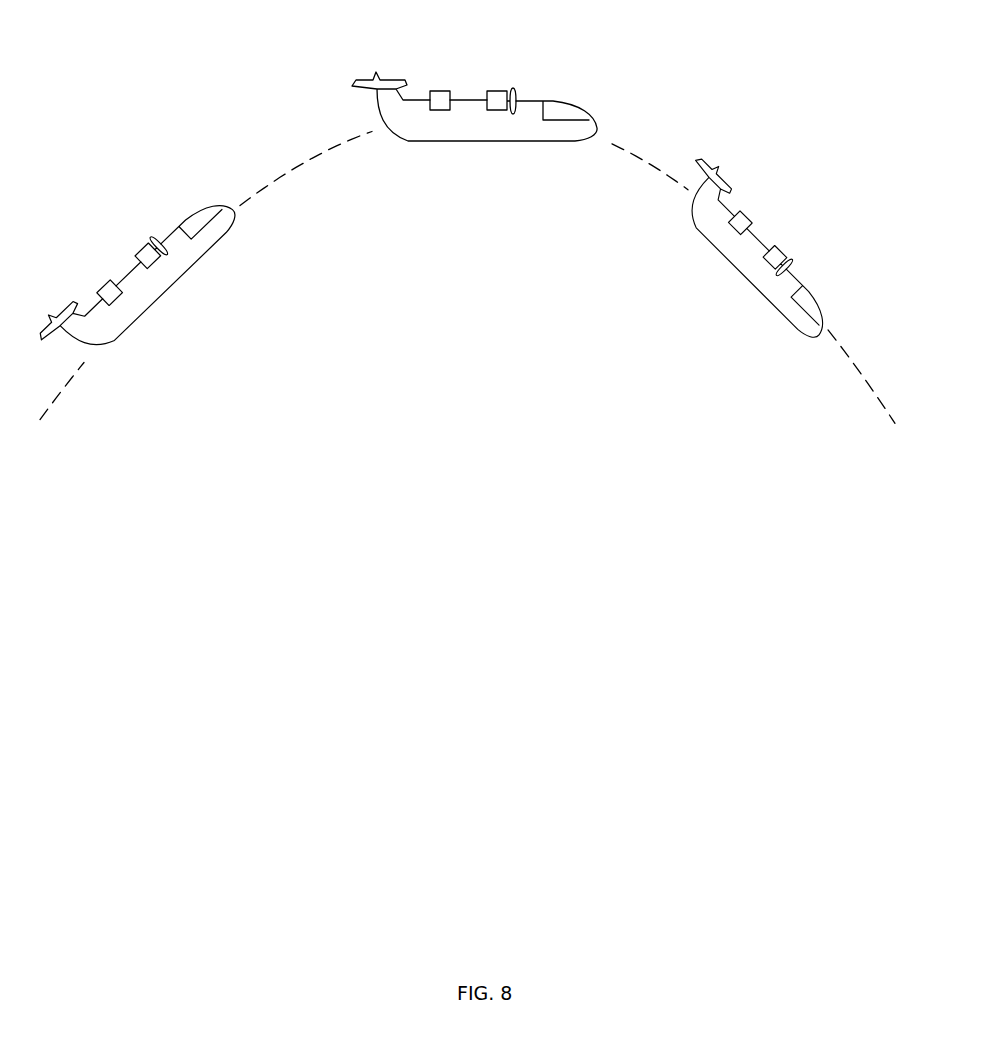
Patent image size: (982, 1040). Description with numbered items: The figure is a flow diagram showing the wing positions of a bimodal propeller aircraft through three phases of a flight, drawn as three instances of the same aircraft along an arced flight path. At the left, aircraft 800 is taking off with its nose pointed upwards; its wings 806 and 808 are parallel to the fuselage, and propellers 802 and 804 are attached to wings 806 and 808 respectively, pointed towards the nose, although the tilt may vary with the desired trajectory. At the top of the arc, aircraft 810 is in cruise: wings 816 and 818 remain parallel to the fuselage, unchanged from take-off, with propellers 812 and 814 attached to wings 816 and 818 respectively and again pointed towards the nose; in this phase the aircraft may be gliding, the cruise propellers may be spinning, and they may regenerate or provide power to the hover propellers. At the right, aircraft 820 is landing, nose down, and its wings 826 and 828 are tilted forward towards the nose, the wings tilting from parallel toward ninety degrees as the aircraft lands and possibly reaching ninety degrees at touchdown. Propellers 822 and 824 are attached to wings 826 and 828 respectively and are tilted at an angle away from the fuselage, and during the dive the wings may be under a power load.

The aircraft 800 is at (118, 347).
The propeller 802 is at (114, 279).
The propeller 804 is at (153, 241).
The wing 806 is at (117, 303).
The wing 808 is at (156, 268).
The aircraft 810 is at (553, 143).
The propeller 812 is at (450, 94).
The propeller 814 is at (513, 90).
The wing 816 is at (428, 111).
The wing 818 is at (492, 111).
The aircraft 820 is at (773, 312).
The propeller 822 is at (752, 219).
The propeller 824 is at (788, 258).
The wing 826 is at (732, 219).
The wing 828 is at (768, 260).